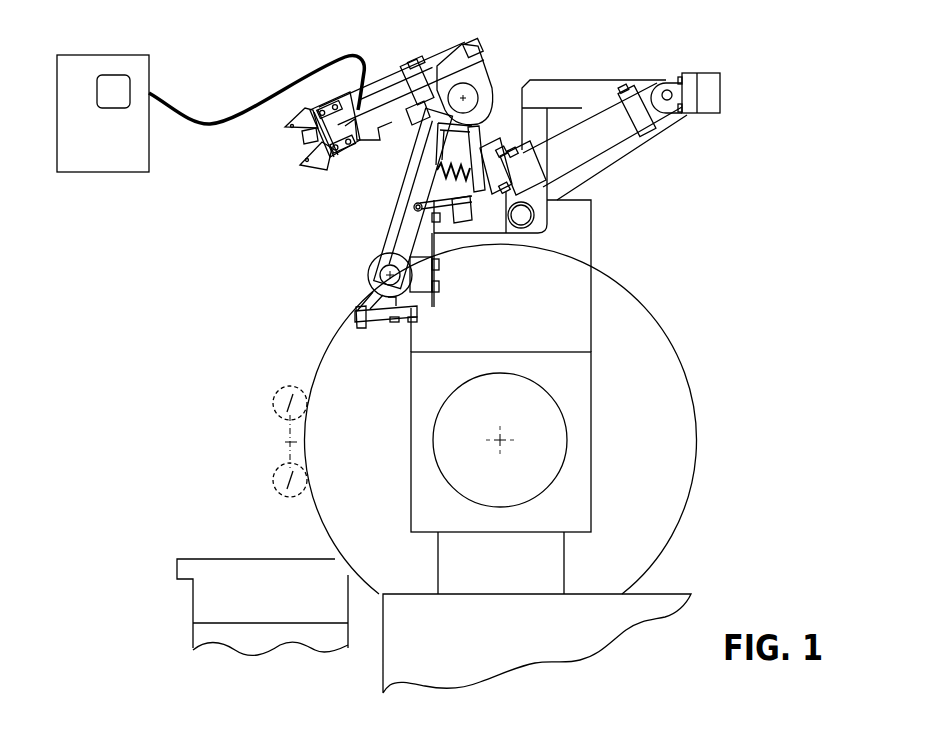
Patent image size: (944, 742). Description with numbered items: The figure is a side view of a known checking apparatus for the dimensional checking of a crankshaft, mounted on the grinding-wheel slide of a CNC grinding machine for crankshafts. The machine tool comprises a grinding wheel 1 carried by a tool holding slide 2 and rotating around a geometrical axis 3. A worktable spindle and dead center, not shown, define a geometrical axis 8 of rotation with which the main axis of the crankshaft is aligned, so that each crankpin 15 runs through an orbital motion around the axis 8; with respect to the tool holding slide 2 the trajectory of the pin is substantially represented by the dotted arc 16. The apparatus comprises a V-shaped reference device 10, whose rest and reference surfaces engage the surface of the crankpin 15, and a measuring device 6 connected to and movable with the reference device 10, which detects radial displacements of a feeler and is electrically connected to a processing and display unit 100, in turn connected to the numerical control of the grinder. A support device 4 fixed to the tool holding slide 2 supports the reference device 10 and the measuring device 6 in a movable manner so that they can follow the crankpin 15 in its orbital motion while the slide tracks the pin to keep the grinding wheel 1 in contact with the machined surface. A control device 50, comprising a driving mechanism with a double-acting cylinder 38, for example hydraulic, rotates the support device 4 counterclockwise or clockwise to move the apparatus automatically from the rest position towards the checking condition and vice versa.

The grinding wheel 1 is at (633, 335).
The tool holding slide 2 is at (553, 241).
The geometrical axis 3 is at (502, 441).
The support device 4 is at (362, 198).
The measuring device 6 is at (388, 86).
The geometrical axis of rotation 8 is at (288, 438).
The reference device 10 is at (322, 152).
The crankpin 15 is at (287, 392).
The arc 16 is at (288, 454).
The double-acting cylinder 38 is at (557, 157).
The control device 50 is at (658, 165).
The processing and display unit 100 is at (207, 27).